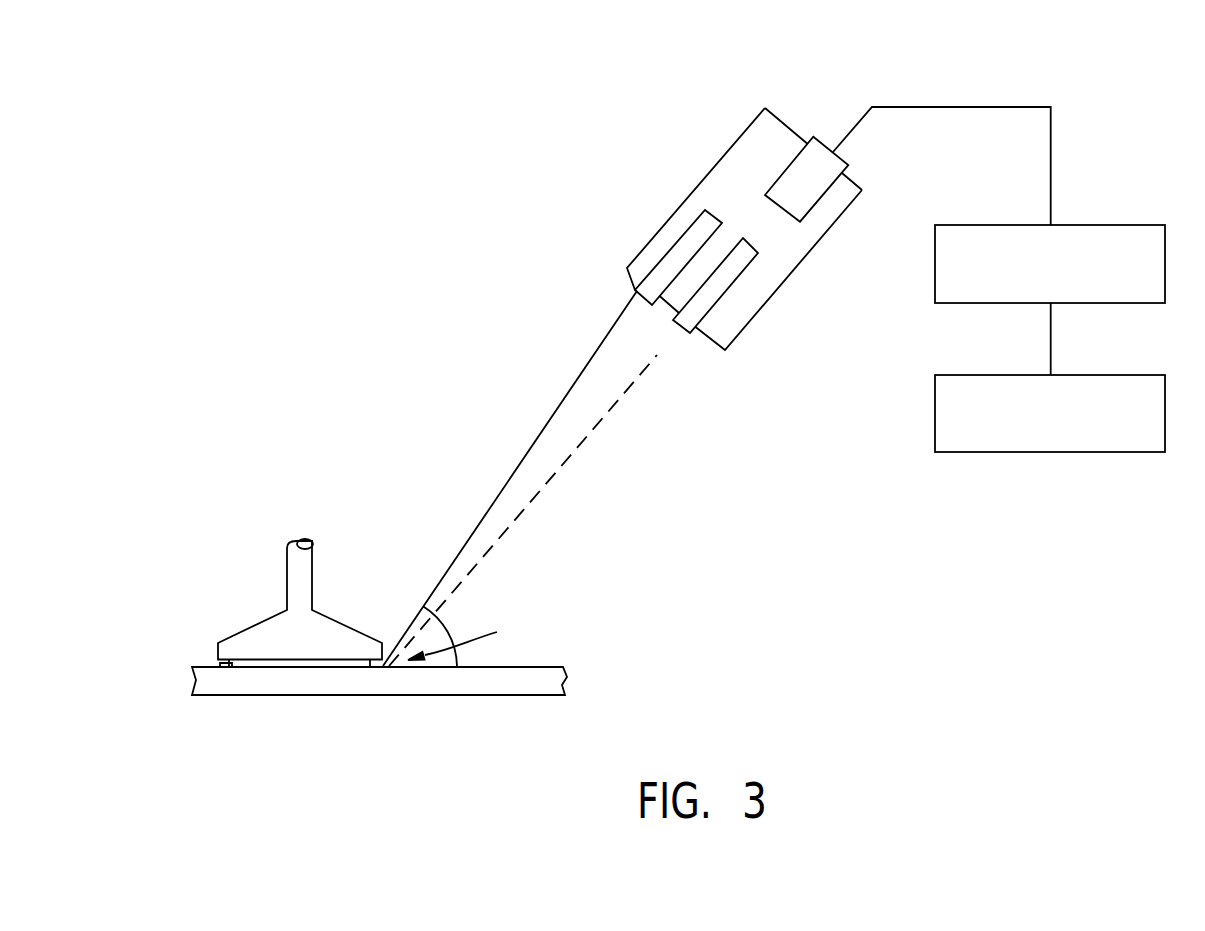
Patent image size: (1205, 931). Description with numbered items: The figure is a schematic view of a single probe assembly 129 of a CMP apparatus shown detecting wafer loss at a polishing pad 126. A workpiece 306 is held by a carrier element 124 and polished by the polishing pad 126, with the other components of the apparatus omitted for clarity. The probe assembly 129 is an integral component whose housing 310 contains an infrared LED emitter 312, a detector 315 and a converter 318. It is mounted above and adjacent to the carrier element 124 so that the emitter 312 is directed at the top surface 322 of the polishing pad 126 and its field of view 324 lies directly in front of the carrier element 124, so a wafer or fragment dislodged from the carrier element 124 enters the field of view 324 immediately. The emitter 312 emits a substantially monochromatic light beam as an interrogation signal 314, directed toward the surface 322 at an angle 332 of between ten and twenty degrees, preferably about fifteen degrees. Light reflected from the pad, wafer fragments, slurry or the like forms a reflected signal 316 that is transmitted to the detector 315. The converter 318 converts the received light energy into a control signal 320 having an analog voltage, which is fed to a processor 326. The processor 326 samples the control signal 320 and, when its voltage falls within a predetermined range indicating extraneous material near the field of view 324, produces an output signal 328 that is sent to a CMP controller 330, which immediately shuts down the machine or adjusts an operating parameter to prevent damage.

The probe assembly 129 is at (665, 130).
The housing 310 is at (677, 205).
The infrared LED emitter 312 is at (655, 260).
The detector 315 is at (728, 290).
The converter 318 is at (821, 137).
The interrogation signal 314 is at (577, 390).
The reflected signal 316 is at (585, 437).
The control signal 320 is at (1030, 88).
The processor 326 is at (1086, 224).
The output signal 328 is at (1002, 338).
The CMP controller 330 is at (1087, 453).
The carrier element 124 is at (263, 622).
The workpiece 306 is at (222, 663).
The polishing pad 126 is at (227, 690).
The top surface of polishing pad 322 is at (537, 667).
The angle 332 is at (447, 620).
The field of view 324 is at (471, 642).